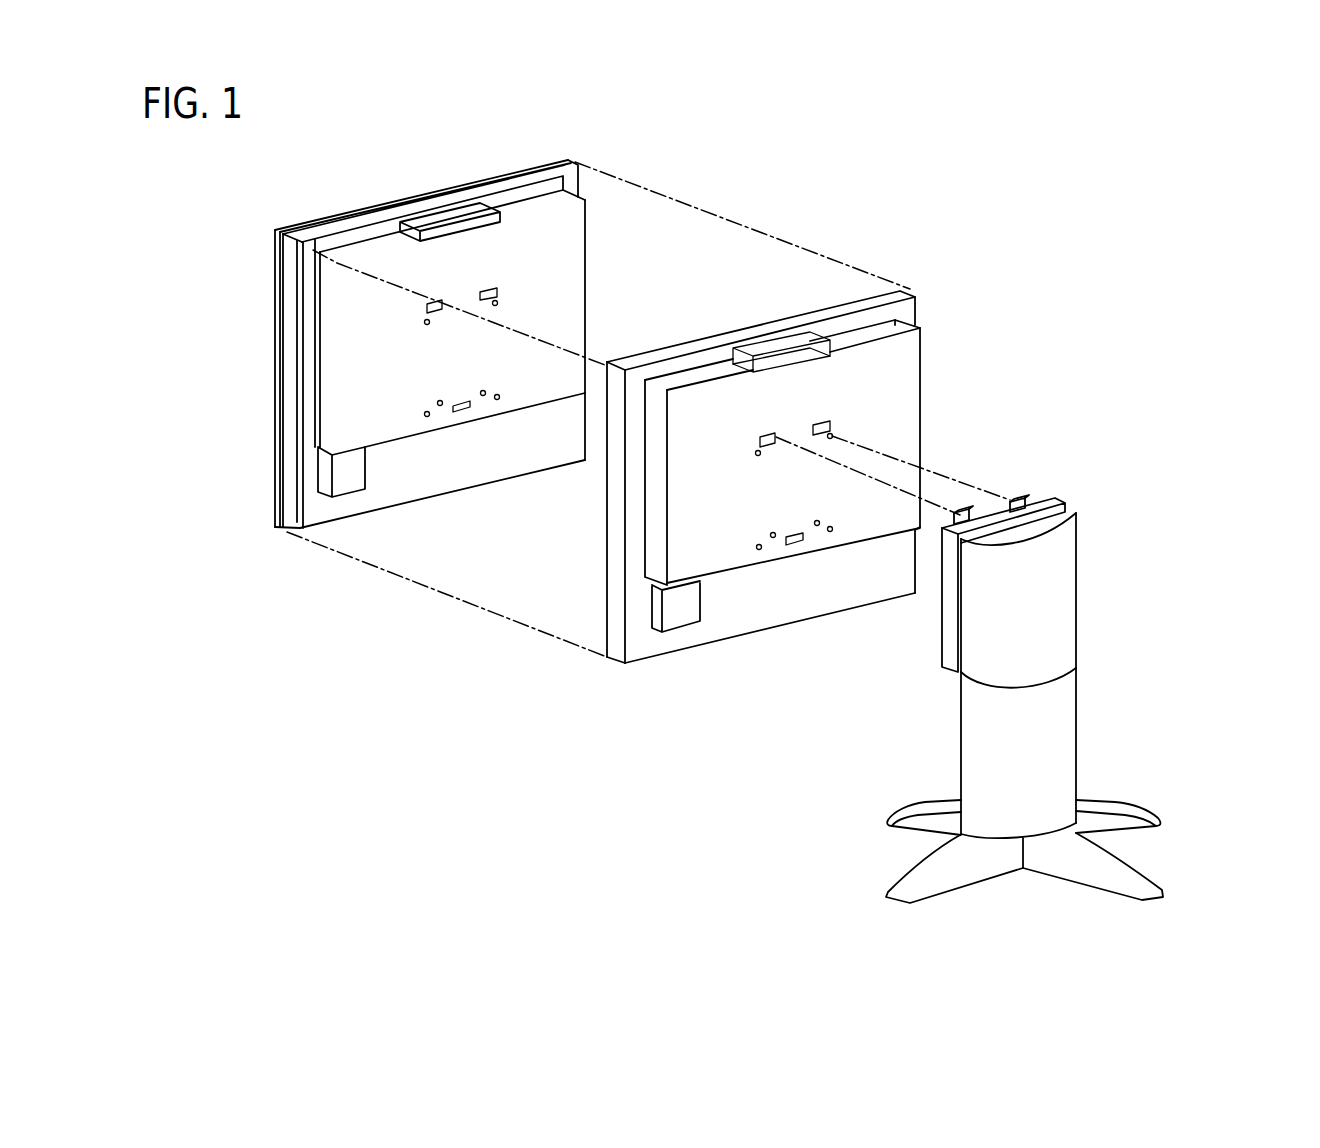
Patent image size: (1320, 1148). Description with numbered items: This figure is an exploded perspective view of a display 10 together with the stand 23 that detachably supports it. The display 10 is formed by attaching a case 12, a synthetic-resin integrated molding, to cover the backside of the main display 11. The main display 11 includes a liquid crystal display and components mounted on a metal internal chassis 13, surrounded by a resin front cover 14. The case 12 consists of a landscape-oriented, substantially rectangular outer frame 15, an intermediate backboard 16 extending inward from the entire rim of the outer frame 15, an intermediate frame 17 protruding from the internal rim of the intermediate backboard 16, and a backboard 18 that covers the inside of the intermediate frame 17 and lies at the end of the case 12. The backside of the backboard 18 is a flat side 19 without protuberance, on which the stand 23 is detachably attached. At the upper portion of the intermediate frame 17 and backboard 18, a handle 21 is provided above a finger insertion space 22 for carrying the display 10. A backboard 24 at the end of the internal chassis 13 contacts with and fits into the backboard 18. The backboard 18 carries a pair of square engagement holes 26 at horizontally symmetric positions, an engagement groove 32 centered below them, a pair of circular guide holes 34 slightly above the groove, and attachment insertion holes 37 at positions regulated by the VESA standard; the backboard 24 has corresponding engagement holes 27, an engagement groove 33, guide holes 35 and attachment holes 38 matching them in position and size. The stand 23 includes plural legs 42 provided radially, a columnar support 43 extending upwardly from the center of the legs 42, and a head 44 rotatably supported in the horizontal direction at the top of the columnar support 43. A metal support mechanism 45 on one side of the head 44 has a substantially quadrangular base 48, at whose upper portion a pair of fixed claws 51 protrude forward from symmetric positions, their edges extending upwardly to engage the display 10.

The display 10 is at (818, 131).
The main display 11 is at (592, 150).
The case 12 is at (912, 285).
The internal chassis 13 is at (325, 402).
The front cover 14 is at (275, 258).
The outer frame 15 is at (618, 600).
The intermediate backboard 16 is at (681, 638).
The intermediate frame 17 is at (655, 543).
The backboard 18 is at (920, 388).
The flat side 19 is at (920, 352).
The handle 21 is at (783, 343).
The finger insertion space 22 is at (798, 352).
The stand 23 is at (1104, 537).
The backboard 24 is at (562, 233).
The engagement holes 26 is at (828, 420).
The engagement holes 27 is at (485, 289).
The engagement groove 32 is at (794, 546).
The engagement groove 33 is at (465, 412).
The guide holes 34 is at (773, 538).
The guide holes 35 is at (441, 406).
The attachment insertion holes 37 is at (827, 436).
The attachment holes 38 is at (496, 300).
The legs 42 is at (917, 826).
The columnar support 43 is at (1060, 723).
The head 44 is at (1060, 600).
The support mechanism 45 is at (942, 630).
The base 48 is at (1058, 500).
The fixed claws 51 is at (964, 508).